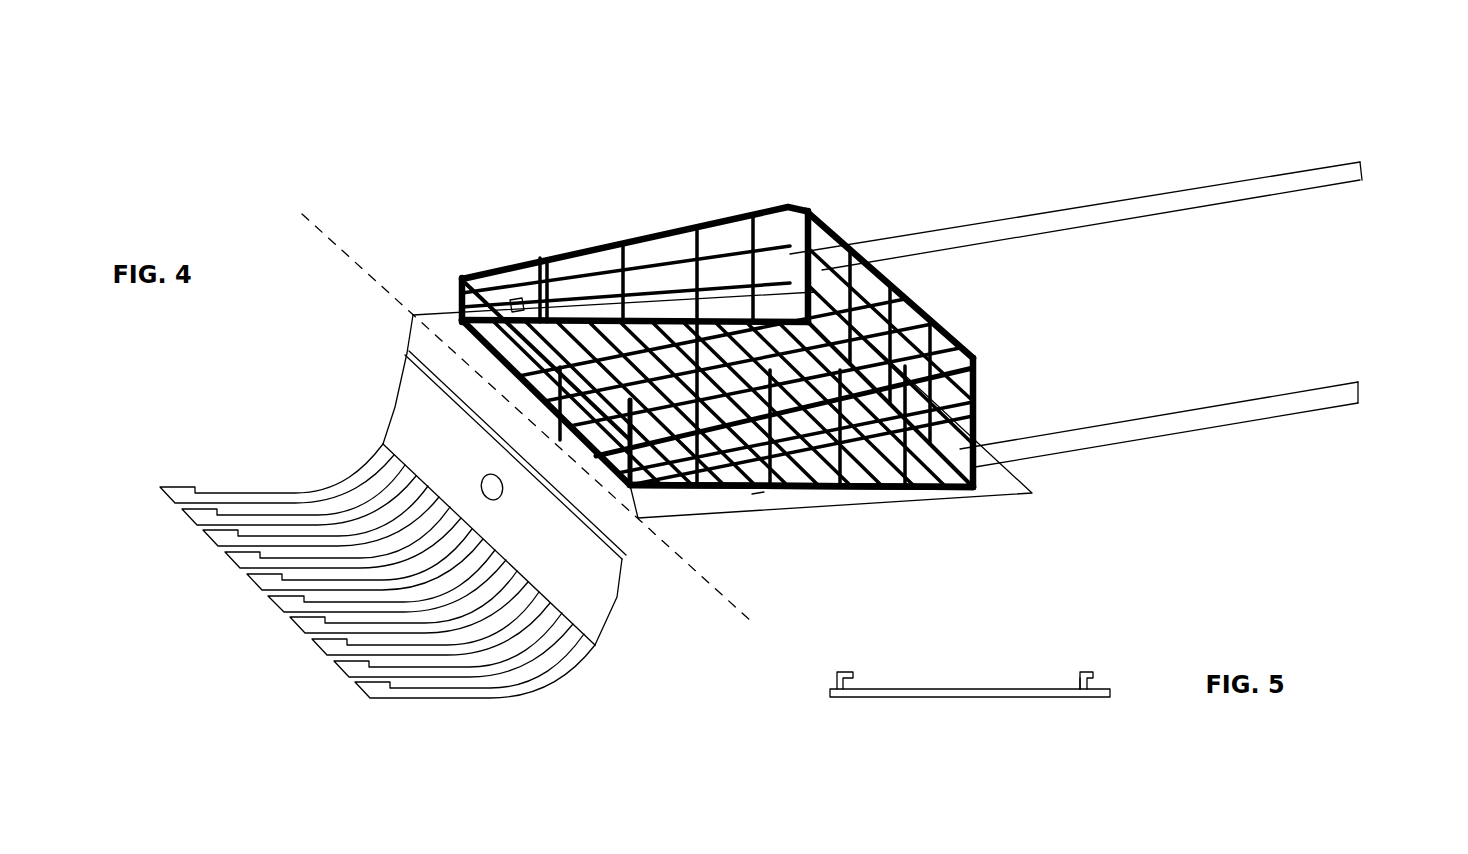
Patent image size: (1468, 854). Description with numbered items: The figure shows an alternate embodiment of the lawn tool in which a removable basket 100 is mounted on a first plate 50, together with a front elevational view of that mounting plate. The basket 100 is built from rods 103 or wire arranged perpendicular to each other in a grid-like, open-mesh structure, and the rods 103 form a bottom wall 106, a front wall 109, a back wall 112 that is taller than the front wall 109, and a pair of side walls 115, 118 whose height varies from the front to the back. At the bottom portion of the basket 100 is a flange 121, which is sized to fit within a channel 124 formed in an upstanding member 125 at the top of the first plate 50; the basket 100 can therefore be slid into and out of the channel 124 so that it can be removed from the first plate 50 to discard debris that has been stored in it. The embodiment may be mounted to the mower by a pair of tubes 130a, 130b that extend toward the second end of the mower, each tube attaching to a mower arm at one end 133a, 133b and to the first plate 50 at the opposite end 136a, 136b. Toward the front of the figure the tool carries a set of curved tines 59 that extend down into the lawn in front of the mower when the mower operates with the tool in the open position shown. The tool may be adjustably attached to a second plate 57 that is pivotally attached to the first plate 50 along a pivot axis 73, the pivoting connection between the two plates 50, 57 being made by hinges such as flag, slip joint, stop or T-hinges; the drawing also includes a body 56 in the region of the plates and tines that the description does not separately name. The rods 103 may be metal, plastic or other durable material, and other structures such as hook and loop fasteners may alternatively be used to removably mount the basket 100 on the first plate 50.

In FIG. 4, the first plate 50 is at (706, 503).
In FIG. 5, the first plate 50 is at (957, 690).
In FIG. 4, the mounting plate 56 is at (413, 410).
In FIG. 4, the second plate 57 is at (433, 357).
In FIG. 4, the curved tines 59 is at (515, 706).
In FIG. 4, the pivot axis 73 is at (330, 232).
In FIG. 4, the removable basket 100 is at (695, 385).
In FIG. 4, the rods 103 is at (652, 355).
In FIG. 4, the bottom wall 106 is at (620, 262).
In FIG. 4, the front wall 109 is at (598, 405).
In FIG. 4, the back wall 112 is at (887, 300).
In FIG. 4, the side wall 115 is at (540, 265).
In FIG. 4, the side wall 118 is at (910, 490).
In FIG. 4, the flange 121 is at (768, 322).
In FIG. 5, the channel 124 is at (1077, 679).
In FIG. 5, the upstanding member 125 is at (1073, 665).
In FIG. 4, the tube 130a is at (1232, 190).
In FIG. 4, the tube 130b is at (1225, 418).
In FIG. 4, the end of tube 133a is at (1362, 166).
In FIG. 4, the end of tube 133b is at (1362, 396).
In FIG. 4, the opposite end of tube 136a is at (518, 300).
In FIG. 4, the opposite end of tube 136b is at (757, 497).